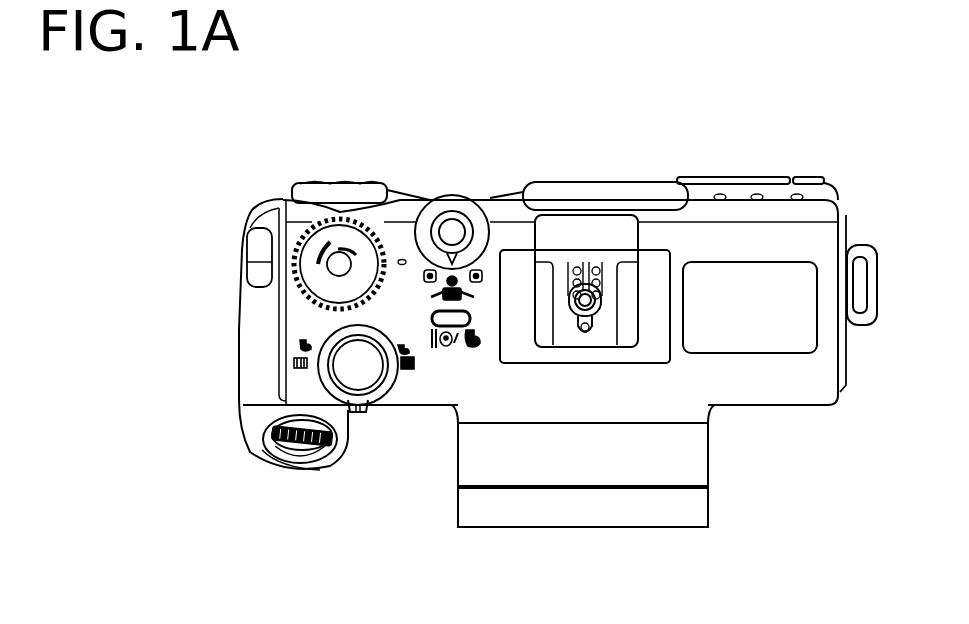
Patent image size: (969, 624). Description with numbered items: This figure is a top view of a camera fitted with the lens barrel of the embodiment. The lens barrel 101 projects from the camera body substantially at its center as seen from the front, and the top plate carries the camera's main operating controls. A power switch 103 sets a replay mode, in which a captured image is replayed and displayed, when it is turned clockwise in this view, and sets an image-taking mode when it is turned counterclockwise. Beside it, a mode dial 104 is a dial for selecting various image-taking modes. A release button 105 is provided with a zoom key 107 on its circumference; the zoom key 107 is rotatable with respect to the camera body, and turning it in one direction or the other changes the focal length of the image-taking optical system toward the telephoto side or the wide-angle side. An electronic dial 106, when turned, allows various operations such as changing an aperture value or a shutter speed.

The lens barrel 101 is at (702, 462).
The power switch 103 is at (470, 203).
The mode dial 104 is at (340, 217).
The release button 105 is at (370, 380).
The electronic dial 106 is at (268, 442).
The zoom key 107 is at (366, 414).